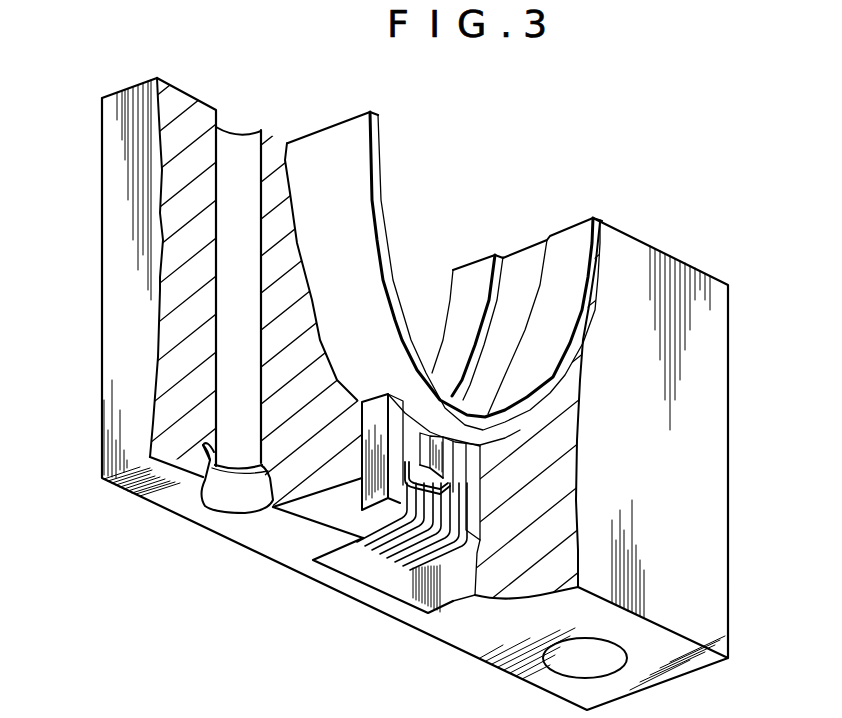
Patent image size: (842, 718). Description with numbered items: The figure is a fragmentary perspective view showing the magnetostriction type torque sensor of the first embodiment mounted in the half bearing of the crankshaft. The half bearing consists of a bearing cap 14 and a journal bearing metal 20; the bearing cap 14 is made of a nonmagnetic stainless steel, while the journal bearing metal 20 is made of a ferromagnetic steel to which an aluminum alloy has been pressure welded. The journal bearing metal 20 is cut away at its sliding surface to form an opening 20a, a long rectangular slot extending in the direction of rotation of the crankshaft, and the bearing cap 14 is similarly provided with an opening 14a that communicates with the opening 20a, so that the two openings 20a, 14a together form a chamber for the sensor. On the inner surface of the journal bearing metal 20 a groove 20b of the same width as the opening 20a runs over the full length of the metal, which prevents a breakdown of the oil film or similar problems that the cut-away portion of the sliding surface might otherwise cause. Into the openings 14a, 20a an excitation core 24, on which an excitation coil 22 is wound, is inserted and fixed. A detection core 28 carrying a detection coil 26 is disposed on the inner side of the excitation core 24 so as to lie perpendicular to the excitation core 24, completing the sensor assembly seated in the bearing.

The bearing cap 14 is at (625, 263).
The opening 14a is at (384, 580).
The journal bearing metal 20 is at (565, 246).
The opening 20a is at (371, 408).
The groove 20b is at (517, 264).
The excitation coil 22 is at (437, 560).
The excitation core 24 is at (307, 498).
The detection coil 26 is at (445, 487).
The detection core 28 is at (440, 455).